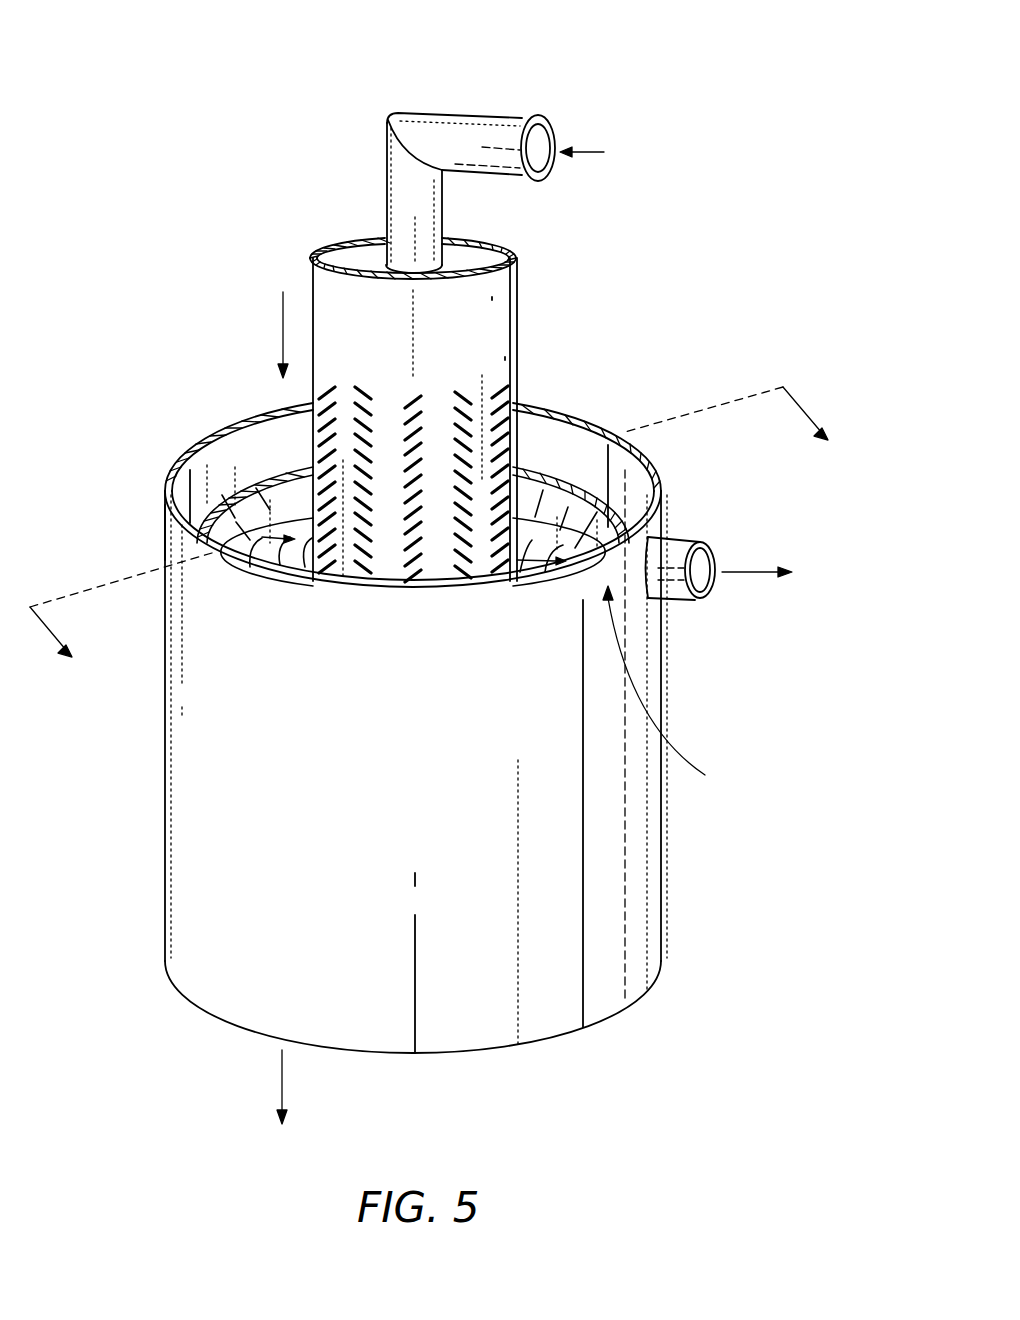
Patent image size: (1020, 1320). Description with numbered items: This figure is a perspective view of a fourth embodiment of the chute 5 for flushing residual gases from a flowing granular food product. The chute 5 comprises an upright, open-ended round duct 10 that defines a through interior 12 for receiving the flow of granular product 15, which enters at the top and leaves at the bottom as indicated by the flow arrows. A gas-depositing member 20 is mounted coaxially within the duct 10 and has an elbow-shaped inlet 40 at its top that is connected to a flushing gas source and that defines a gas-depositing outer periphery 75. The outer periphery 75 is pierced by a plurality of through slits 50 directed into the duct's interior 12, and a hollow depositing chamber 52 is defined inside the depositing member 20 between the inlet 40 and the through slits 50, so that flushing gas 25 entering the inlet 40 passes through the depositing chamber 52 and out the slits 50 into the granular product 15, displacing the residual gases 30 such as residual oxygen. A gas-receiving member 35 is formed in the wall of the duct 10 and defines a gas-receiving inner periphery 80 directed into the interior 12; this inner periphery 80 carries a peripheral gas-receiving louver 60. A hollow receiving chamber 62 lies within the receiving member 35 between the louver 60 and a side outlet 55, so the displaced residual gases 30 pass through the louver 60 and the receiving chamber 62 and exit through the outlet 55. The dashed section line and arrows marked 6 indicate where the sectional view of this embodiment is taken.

The chute 5 is at (722, 48).
The section line 6- 6 is at (437, 538).
The duct 10 is at (210, 803).
The interior 12 is at (272, 488).
The granular product 15 is at (283, 323).
The gas-depositing member 20 is at (370, 245).
The flushing gas 25 is at (604, 152).
The residual gases 30 is at (758, 576).
The gas-receiving member 35 is at (663, 693).
The inlet 40 is at (488, 132).
The through slits 50 is at (313, 582).
The depositing chamber 52 is at (492, 297).
The outlet 55 is at (702, 543).
The peripheral gas-receiving louver 60 is at (227, 512).
The receiving chamber 62 is at (163, 505).
The gas-depositing outer periphery 75 is at (505, 357).
The gas-receiving inner periphery 80 is at (567, 480).